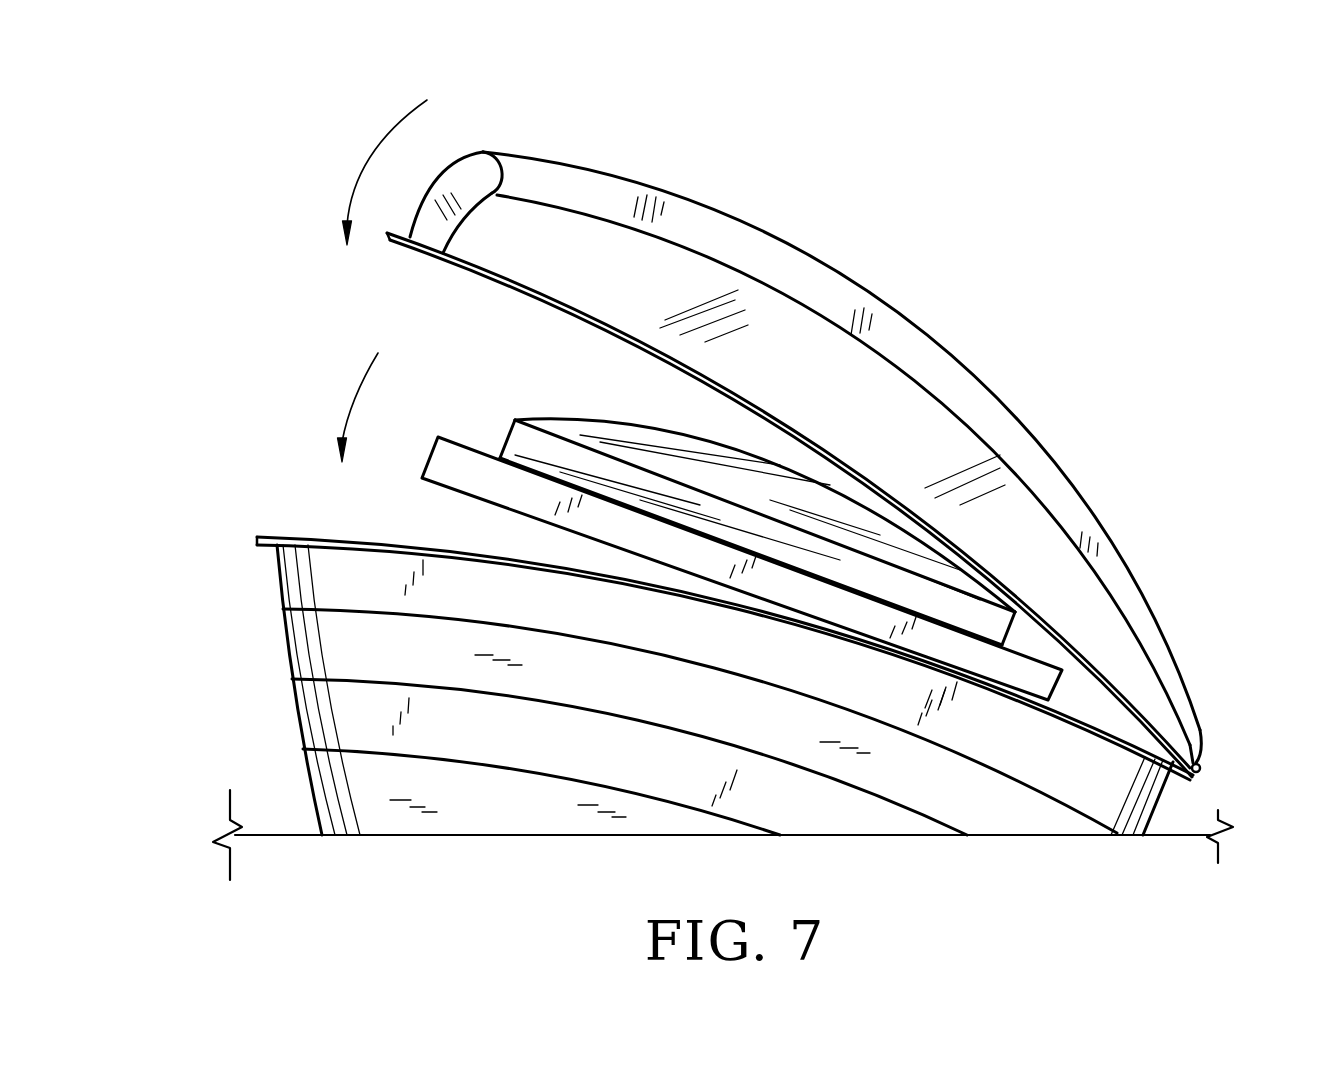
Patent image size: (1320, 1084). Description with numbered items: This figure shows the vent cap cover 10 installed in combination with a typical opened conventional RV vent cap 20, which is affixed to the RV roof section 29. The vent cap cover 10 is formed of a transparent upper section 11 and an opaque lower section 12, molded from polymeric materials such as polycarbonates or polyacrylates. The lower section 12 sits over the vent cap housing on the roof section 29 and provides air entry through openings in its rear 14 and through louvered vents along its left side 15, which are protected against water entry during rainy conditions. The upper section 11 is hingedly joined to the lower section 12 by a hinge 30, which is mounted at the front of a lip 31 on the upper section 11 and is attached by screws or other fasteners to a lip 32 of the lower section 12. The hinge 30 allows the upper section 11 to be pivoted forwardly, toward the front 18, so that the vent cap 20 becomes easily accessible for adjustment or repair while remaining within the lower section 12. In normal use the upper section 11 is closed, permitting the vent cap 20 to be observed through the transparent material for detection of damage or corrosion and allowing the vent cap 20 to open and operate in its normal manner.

The vent cap cover 10 is at (971, 198).
The transparent upper section 11 is at (983, 355).
The opaque lower section 12 is at (436, 856).
The rear 14 is at (725, 718).
The left side 15 is at (855, 831).
The front 18 is at (1187, 793).
The vent cap 20 is at (481, 413).
The RV roof section 29 is at (277, 833).
The hinge 30 is at (1201, 765).
The lip 31 is at (815, 440).
The lip 32 is at (1090, 733).